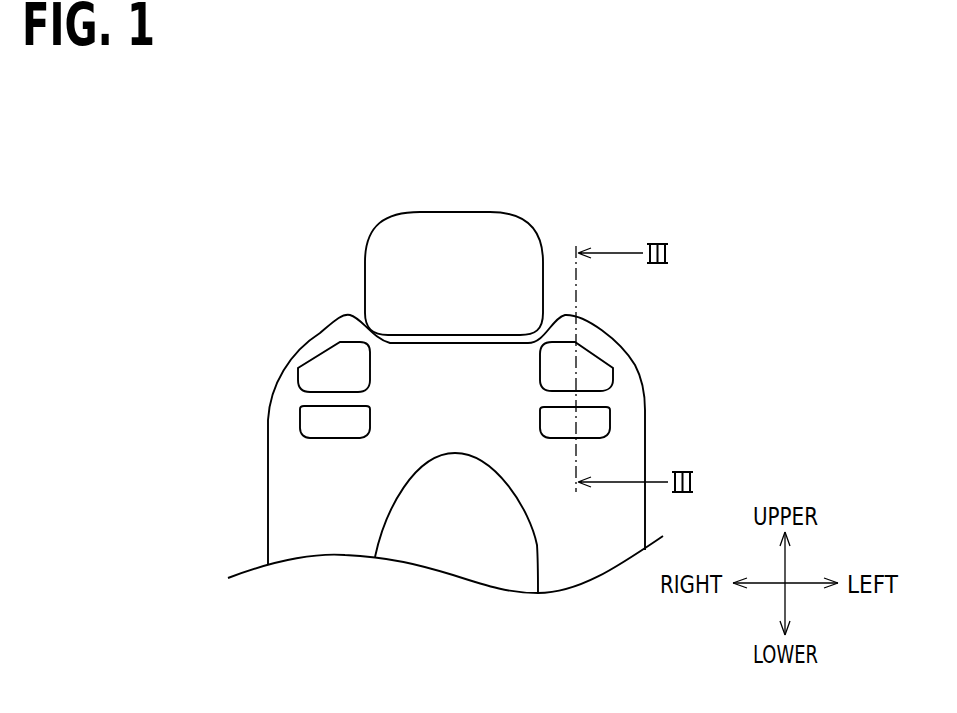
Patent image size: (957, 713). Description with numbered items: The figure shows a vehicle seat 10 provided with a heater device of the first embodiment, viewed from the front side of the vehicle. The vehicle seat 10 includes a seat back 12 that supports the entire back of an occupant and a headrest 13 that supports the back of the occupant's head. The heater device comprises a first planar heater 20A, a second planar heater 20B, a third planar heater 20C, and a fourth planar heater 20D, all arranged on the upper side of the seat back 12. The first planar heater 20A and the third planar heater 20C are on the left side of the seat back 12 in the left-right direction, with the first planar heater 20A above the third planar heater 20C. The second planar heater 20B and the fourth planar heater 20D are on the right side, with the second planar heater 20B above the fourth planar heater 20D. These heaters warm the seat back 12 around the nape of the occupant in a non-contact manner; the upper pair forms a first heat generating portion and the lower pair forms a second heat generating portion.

The vehicle seat 10 is at (356, 230).
The seat back 12 is at (643, 382).
The headrest 13 is at (495, 211).
The first planar heater 20A is at (588, 363).
The second planar heater 20B is at (322, 378).
The third planar heater 20C is at (603, 419).
The fourth planar heater 20D is at (318, 424).